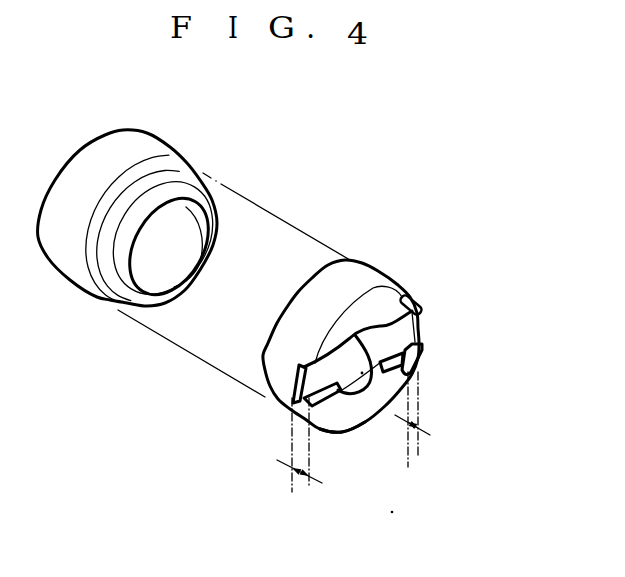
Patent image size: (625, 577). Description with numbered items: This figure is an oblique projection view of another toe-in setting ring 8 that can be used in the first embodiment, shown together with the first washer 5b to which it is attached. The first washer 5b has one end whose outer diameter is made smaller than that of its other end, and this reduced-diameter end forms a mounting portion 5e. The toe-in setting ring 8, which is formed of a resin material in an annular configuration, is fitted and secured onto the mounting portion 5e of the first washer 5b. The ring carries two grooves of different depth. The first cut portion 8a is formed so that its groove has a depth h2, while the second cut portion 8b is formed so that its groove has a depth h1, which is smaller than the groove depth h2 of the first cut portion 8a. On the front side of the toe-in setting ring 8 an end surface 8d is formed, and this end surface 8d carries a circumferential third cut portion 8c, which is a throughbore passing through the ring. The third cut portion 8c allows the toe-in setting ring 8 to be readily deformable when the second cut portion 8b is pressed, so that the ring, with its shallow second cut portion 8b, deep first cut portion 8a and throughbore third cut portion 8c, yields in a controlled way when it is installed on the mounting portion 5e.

The first washer 5b is at (162, 143).
The mounting portion 5e is at (110, 277).
The toe-in setting ring 8 is at (365, 262).
The first cut portion 8a is at (294, 398).
The second cut portion 8b is at (422, 334).
The third cut portion 8c is at (415, 298).
The end surface 8d is at (347, 420).
The groove depth of second cut portion h1 is at (412, 434).
The groove depth of first cut portion h2 is at (303, 477).